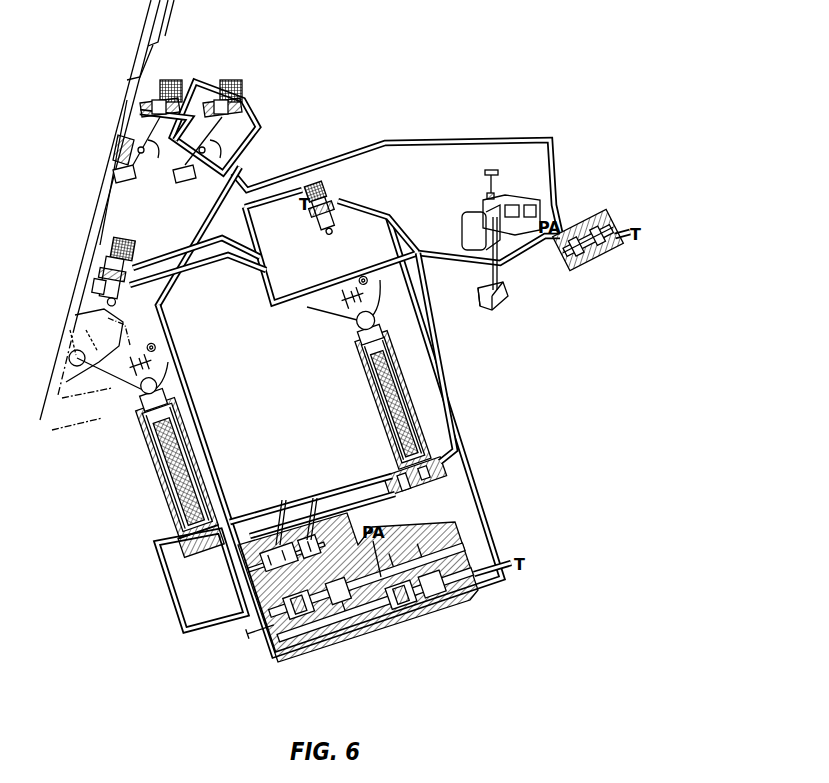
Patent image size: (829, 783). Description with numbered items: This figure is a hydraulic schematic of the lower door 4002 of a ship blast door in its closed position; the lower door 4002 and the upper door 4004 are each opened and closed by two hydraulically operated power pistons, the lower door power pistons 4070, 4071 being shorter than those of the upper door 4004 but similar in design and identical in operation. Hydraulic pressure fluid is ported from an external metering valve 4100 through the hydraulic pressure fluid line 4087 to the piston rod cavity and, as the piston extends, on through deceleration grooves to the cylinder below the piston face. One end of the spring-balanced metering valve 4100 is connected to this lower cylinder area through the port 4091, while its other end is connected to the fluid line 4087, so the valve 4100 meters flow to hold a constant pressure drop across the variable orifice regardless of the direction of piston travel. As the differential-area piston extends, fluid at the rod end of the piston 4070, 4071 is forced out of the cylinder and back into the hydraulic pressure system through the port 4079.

The lower door 4002 is at (92, 213).
The upper door 4004 is at (148, 5).
The lower door power piston 4070 is at (376, 405).
The lower door power piston 4071 is at (158, 482).
The port 4079 is at (434, 457).
The hydraulic pressure fluid line 4087 is at (391, 467).
The port 4091 is at (391, 492).
The metering valve 4100 is at (277, 552).